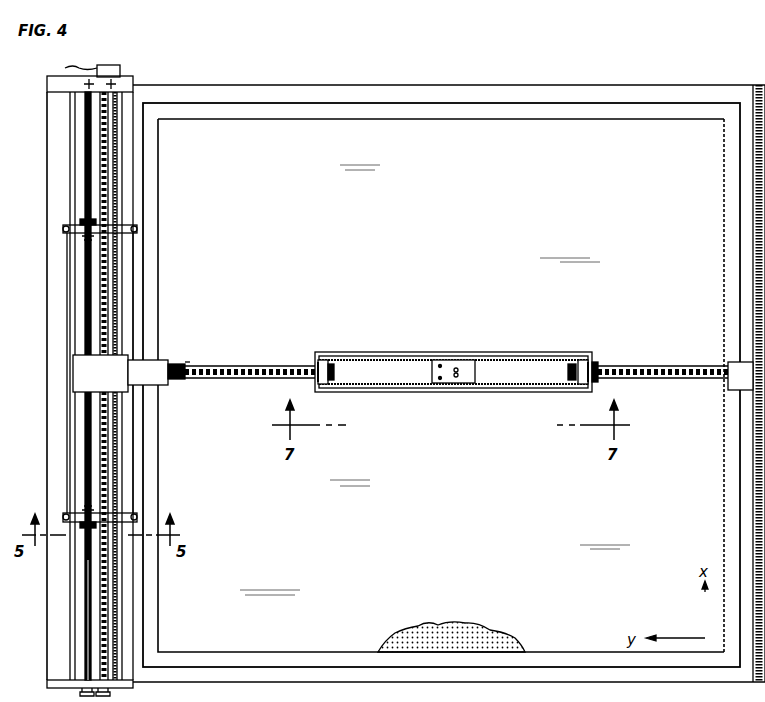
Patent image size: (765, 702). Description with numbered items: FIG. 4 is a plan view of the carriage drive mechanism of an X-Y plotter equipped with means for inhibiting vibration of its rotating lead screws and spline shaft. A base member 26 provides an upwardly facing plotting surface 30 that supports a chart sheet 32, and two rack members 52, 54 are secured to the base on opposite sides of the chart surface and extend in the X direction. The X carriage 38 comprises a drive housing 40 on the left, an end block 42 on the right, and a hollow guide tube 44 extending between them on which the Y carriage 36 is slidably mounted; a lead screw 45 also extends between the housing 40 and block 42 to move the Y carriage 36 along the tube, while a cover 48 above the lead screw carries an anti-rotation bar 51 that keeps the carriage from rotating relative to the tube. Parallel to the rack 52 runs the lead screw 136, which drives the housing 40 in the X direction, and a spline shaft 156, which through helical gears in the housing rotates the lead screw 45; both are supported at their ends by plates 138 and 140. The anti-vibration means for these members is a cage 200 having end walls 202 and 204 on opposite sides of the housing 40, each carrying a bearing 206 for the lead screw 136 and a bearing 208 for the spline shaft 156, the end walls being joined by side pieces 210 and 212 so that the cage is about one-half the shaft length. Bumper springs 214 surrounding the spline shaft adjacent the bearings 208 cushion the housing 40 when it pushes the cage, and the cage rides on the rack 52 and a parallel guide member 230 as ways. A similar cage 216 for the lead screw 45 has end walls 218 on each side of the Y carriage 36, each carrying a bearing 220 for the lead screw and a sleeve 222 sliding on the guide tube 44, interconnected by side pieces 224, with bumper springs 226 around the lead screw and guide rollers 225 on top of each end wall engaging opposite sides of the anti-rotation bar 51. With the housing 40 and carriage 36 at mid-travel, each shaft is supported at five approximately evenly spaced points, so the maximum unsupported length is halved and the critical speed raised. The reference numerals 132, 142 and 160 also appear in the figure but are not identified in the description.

The base member 26 is at (642, 675).
The plotting surface 30 is at (480, 628).
The chart sheet 32 is at (442, 540).
The Y carriage 36 is at (450, 360).
The X carriage 38 is at (170, 356).
The drive housing 40 is at (73, 371).
The end block 42 is at (738, 362).
The guide tube 44 is at (218, 366).
The lead screw 45 is at (254, 366).
The cover 48 is at (170, 384).
The anti-rotation bar 51 is at (192, 380).
The rack member 52 is at (118, 628).
The rack member 54 is at (753, 244).
The foot 132 is at (112, 694).
The lead screw 136 is at (110, 598).
The end plate 138 is at (135, 686).
The end plate 140 is at (132, 80).
The motor cap 142 is at (121, 68).
The spline shaft 156 is at (86, 588).
The foot 160 is at (80, 694).
The cage 200 is at (140, 290).
The end wall 202 is at (68, 228).
The end wall 204 is at (140, 516).
The bearing 206 is at (110, 215).
The bearing 208 is at (84, 222).
The side piece 210 is at (70, 444).
The side piece 212 is at (130, 456).
The bumper spring 214 is at (84, 240).
The cage 216 is at (550, 352).
The end wall 218 is at (315, 366).
The bearing 220 is at (598, 364).
The sleeve 222 is at (592, 380).
The side piece 224 is at (370, 352).
The guide roller 225 is at (325, 376).
The bumper spring 226 is at (330, 388).
The guide member 230 is at (70, 636).